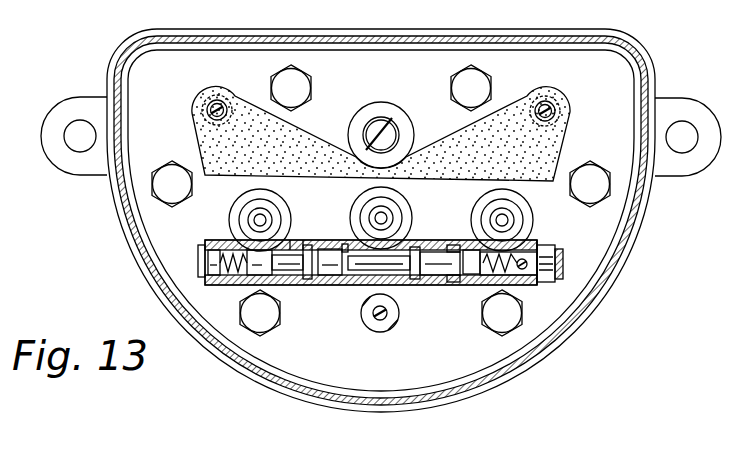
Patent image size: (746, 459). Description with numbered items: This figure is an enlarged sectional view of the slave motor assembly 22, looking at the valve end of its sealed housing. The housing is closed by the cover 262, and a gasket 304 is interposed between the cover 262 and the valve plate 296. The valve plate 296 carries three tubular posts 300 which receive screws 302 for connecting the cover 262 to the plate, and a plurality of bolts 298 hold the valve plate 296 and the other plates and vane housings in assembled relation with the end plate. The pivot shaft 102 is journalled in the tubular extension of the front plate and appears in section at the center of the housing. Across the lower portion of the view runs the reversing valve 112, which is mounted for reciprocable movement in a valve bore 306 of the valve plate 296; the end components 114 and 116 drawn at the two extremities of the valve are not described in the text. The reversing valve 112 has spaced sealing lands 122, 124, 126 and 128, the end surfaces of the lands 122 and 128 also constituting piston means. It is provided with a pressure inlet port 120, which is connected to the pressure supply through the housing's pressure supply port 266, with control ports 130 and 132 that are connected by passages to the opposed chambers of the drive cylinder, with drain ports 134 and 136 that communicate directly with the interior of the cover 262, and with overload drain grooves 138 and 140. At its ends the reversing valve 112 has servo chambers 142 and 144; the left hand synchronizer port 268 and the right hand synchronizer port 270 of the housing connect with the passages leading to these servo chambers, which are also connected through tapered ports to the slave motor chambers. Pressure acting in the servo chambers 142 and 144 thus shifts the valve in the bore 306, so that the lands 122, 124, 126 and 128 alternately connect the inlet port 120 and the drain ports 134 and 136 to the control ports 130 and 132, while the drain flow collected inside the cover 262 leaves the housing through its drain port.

The slave motor assembly 22 is at (628, 287).
The pivot shaft 102 is at (381, 130).
The reversing valve 112 is at (434, 260).
The end nut 114 is at (235, 263).
The spring screw 116 is at (500, 266).
The pressure inlet port 120 is at (422, 250).
The sealing land 122 is at (263, 258).
The sealing land 124 is at (332, 258).
The sealing land 126 is at (398, 262).
The sealing land 128 is at (475, 258).
The control port 130 is at (345, 251).
The control port 132 is at (412, 262).
The drain port 134 is at (308, 282).
The drain port 136 is at (455, 275).
The overload drain groove 138 is at (298, 246).
The overload drain groove 140 is at (466, 240).
The servo chamber 142 is at (254, 328).
The servo chamber 144 is at (554, 253).
The cover 262 is at (138, 47).
The pressure supply port 266 is at (384, 210).
The left hand synchronizer port 268 is at (258, 214).
The right hand synchronizer port 270 is at (506, 216).
The valve plate 296 is at (542, 278).
The bolts 298 is at (285, 74).
The tubular posts 300 is at (207, 105).
The screws 302 is at (221, 107).
The gasket 304 is at (317, 147).
The valve bore 306 is at (546, 246).